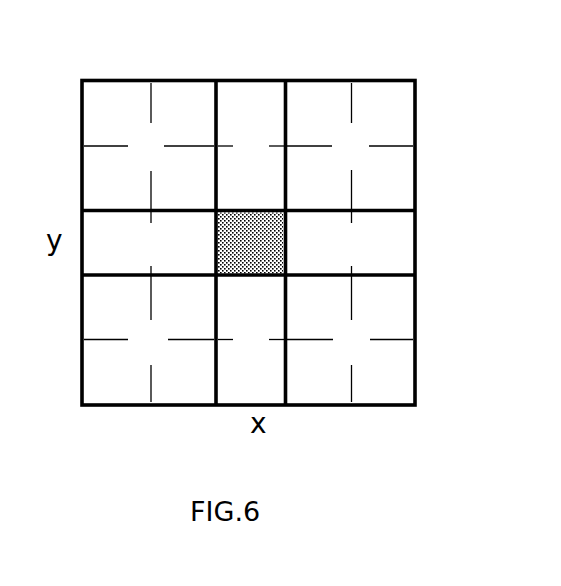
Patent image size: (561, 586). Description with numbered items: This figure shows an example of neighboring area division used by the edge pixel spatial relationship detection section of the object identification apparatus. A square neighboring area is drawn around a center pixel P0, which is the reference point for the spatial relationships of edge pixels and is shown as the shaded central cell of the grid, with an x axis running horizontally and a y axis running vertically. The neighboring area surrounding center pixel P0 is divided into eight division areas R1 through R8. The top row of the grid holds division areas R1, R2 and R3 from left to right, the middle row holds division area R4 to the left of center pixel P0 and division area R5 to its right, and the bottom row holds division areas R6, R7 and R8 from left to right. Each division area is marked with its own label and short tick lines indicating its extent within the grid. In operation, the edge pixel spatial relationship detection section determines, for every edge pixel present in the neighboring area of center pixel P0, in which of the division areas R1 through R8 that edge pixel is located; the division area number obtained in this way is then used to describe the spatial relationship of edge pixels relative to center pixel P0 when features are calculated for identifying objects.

The division area R1 is at (149, 146).
The division area R2 is at (251, 146).
The division area R3 is at (350, 146).
The division area R4 is at (149, 243).
The division area R5 is at (350, 243).
The division area R6 is at (149, 341).
The division area R7 is at (251, 341).
The division area R8 is at (350, 341).
The center pixel P0 is at (260, 238).